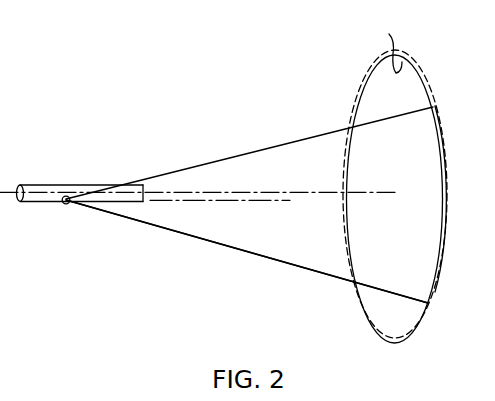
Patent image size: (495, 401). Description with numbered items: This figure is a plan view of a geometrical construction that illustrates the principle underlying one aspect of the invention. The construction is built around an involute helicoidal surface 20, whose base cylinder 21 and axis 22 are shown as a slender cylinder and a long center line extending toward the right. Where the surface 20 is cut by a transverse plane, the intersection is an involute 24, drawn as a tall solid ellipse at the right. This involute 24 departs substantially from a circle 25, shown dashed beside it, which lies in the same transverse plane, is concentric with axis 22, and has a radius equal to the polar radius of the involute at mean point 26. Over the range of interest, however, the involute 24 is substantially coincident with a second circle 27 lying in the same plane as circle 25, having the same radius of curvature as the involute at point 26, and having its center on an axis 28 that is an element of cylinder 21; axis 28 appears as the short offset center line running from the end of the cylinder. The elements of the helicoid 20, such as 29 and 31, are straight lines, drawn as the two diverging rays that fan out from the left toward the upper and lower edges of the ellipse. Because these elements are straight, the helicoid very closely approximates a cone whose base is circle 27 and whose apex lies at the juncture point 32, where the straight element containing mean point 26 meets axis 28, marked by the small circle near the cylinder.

The involute helicoidal surface 20 is at (312, 247).
The base cylinder 21 is at (24, 202).
The axis 22 is at (207, 192).
The involute 24 is at (437, 106).
The circle 25 is at (421, 48).
The mean point 26 is at (444, 202).
The circle 27 is at (384, 45).
The axis 28 is at (230, 201).
The element of helicoid 29 is at (300, 139).
The element of helicoid 31 is at (252, 257).
The juncture point 32 is at (63, 204).